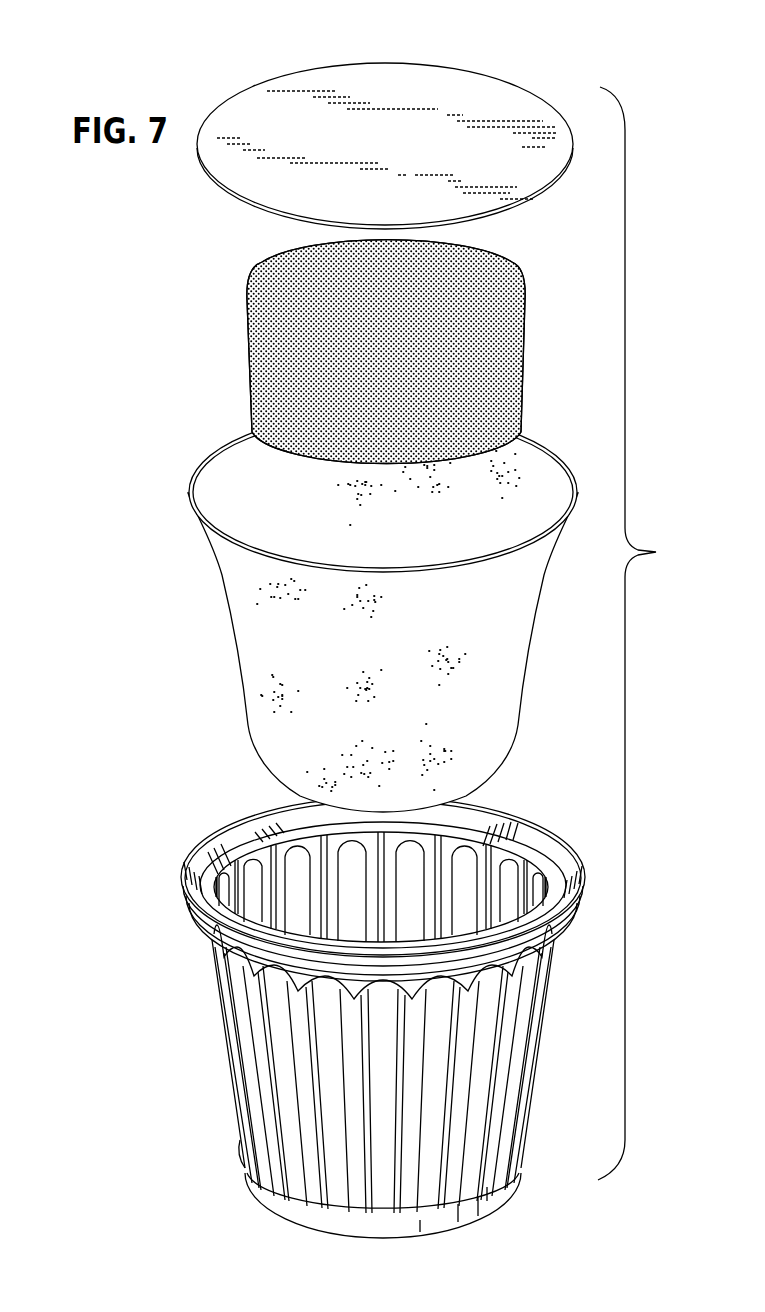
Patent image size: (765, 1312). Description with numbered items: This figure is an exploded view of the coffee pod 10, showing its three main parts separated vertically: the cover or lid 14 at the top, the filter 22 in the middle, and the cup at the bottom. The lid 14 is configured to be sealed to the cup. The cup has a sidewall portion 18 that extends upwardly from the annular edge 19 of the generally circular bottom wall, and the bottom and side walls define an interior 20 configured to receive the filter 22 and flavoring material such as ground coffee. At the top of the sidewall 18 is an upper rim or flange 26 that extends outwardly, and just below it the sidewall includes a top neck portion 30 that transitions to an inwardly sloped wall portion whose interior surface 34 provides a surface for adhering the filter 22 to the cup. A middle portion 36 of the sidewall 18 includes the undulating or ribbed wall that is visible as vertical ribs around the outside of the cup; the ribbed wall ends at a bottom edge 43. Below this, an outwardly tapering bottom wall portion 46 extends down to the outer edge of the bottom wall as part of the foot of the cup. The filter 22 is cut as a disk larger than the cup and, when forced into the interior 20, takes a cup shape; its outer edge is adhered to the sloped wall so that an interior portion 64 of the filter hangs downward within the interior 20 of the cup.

The coffee pod 10 is at (573, 75).
The cover or lid 14 is at (477, 93).
The sidewall portion 18 is at (383, 1017).
The edge 19 is at (487, 1208).
The interior 20 is at (418, 903).
The filter 22 is at (359, 612).
The upper rim or flange 26 is at (563, 842).
The top neck portion 30 is at (208, 937).
The interior surface 34 is at (232, 850).
The middle portion 36 is at (225, 1050).
The bottom edge 43 is at (243, 1155).
The bottom wall portion 46 is at (268, 1188).
The interior portion 64 is at (207, 673).